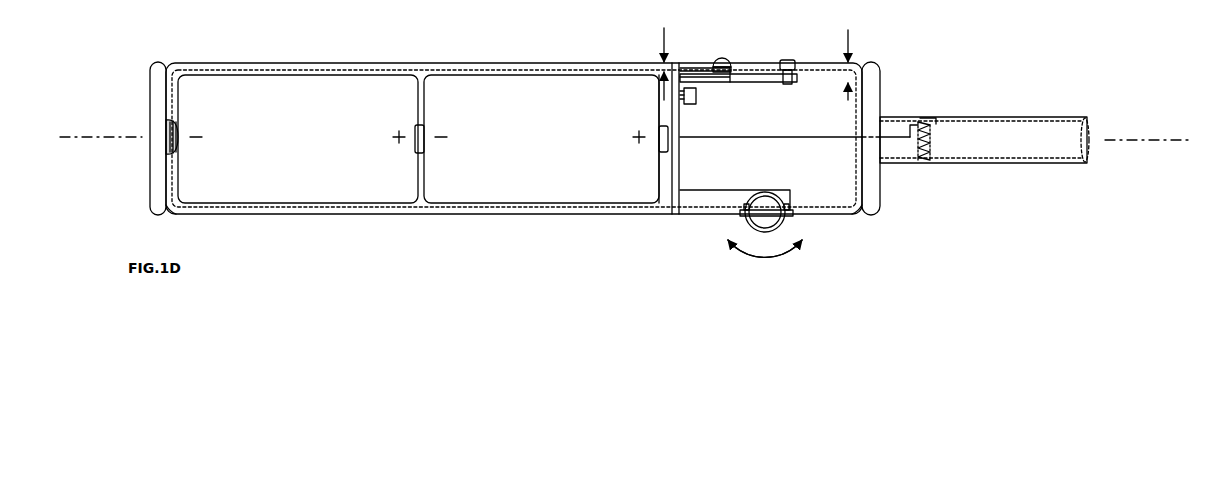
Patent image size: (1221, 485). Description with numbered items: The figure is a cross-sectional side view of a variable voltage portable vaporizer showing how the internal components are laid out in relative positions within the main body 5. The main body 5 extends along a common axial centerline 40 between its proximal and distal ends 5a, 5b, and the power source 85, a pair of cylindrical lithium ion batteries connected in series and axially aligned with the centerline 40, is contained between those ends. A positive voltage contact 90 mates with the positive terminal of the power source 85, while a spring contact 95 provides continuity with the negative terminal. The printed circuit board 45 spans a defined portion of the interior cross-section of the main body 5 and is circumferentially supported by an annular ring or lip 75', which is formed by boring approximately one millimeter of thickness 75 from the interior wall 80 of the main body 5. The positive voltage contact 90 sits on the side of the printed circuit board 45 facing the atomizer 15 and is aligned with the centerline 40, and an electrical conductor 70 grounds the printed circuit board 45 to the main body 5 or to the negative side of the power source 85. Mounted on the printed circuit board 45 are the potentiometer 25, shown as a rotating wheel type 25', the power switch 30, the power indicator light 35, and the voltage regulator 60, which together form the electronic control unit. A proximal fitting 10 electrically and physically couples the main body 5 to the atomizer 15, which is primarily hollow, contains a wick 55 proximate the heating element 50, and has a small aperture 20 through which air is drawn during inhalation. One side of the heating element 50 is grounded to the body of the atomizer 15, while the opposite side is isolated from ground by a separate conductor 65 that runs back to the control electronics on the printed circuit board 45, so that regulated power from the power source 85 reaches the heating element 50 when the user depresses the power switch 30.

The main body 5 is at (456, 63).
The proximal end of main body 5a is at (868, 214).
The distal end of main body 5b is at (170, 214).
The proximal fitting 10 is at (872, 62).
The atomizer 15 is at (159, 62).
The aperture 20 is at (932, 118).
The potentiometer 25 is at (758, 223).
The rotating wheel type potentiometer 25' is at (765, 249).
The power switch 30 is at (788, 60).
The power indicator light 35 is at (722, 57).
The axial centerline 40 is at (70, 137).
The printed circuit board 45 is at (680, 168).
The heating element 50 is at (980, 117).
The wick 55 is at (932, 140).
The voltage regulator 60 is at (696, 100).
The conductor 65 is at (780, 145).
The electrical conductor 70 is at (664, 206).
The thickness 75 is at (665, 34).
The annular ring or lip 75' is at (690, 140).
The interior wall 80 is at (849, 54).
The power source 85 is at (418, 139).
The positive voltage contact 90 is at (668, 146).
The spring contact 95 is at (168, 152).